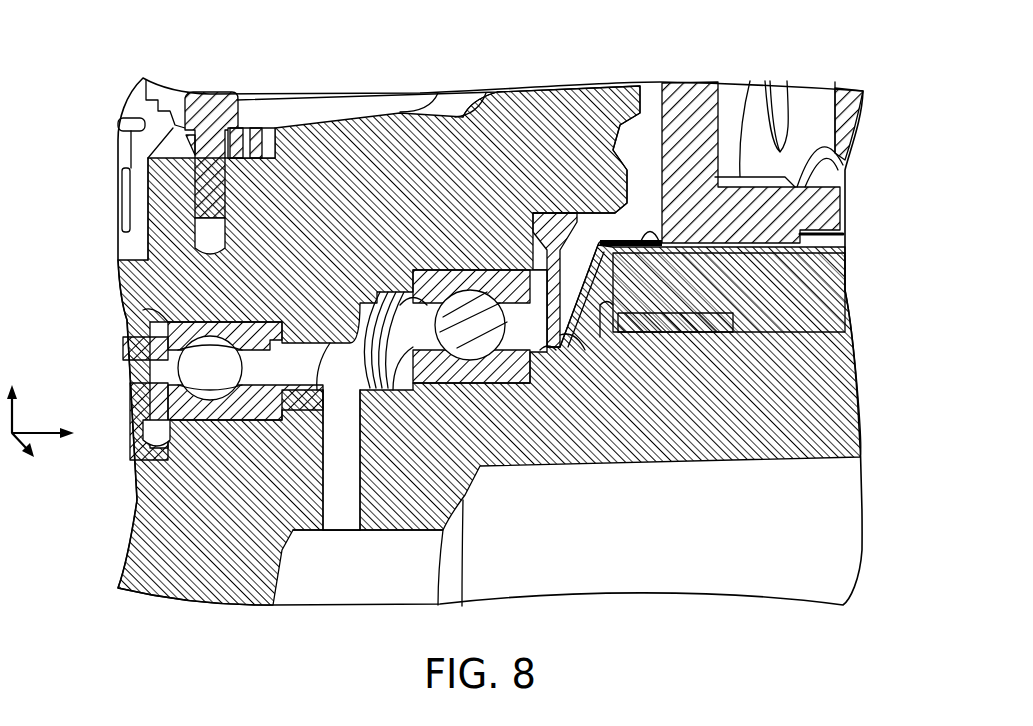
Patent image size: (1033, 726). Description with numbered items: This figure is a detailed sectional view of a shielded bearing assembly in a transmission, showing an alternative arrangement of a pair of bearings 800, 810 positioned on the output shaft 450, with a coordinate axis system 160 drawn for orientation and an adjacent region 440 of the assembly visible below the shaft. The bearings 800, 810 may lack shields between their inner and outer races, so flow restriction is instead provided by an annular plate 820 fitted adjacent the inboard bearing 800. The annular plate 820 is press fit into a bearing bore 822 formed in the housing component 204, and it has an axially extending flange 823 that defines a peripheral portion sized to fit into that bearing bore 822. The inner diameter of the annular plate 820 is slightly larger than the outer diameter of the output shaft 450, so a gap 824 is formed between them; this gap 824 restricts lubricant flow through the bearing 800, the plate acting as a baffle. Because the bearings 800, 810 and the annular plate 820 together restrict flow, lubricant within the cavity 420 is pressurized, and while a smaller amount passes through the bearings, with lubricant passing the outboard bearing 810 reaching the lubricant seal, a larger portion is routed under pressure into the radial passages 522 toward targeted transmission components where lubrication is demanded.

The coordinate system 160 is at (52, 377).
The housing component 204 is at (547, 103).
The cavity 420 is at (362, 384).
The cavity 440 is at (830, 480).
The output shaft 450 is at (835, 400).
The radial passages 522 is at (317, 441).
The bearing 800 is at (446, 250).
The bearing 810 is at (233, 316).
The annular plate 820 is at (590, 215).
The bearing bore 822 is at (607, 213).
The axially extending flange 823 is at (540, 212).
The gap 824 is at (565, 360).